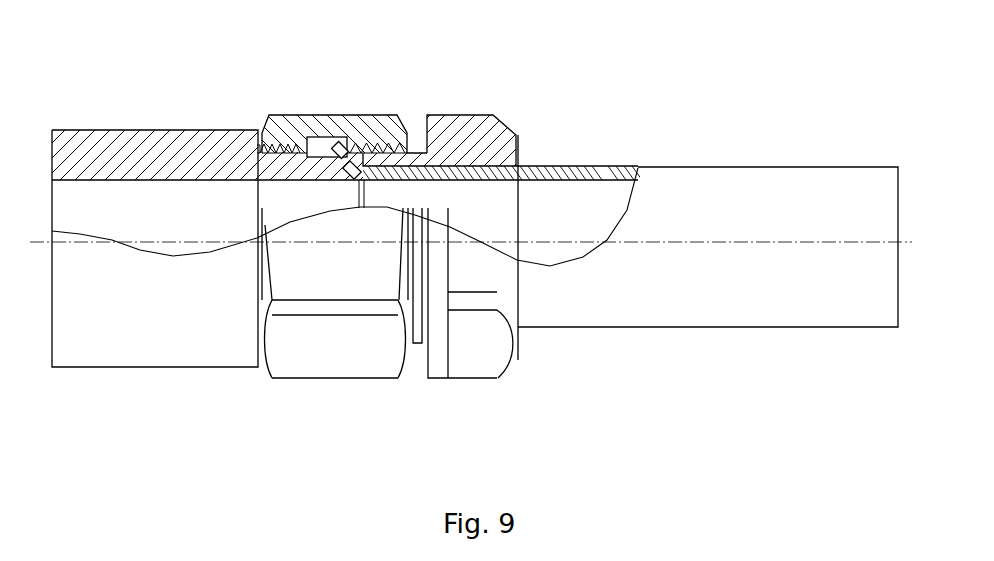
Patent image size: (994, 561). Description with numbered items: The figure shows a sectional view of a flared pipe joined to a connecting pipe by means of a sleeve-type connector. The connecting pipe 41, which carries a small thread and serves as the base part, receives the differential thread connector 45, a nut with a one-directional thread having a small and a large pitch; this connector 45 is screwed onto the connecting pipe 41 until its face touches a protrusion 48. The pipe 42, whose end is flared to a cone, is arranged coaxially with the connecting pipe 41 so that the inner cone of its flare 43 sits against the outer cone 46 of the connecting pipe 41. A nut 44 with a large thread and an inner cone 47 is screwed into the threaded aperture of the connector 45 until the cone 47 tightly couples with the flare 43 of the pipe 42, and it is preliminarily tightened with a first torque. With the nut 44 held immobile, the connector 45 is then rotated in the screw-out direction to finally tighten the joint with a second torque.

The connecting pipe 41 is at (144, 292).
The pipe 42 is at (585, 172).
The flare 43 is at (372, 147).
The nut 44 is at (473, 328).
The differential thread connector 45 is at (347, 337).
The outer cone 46 is at (340, 150).
The inner cone 47 is at (350, 168).
The protrusion 48 is at (266, 134).